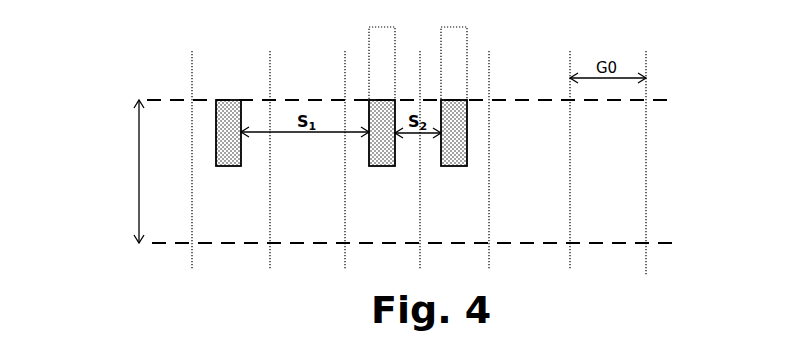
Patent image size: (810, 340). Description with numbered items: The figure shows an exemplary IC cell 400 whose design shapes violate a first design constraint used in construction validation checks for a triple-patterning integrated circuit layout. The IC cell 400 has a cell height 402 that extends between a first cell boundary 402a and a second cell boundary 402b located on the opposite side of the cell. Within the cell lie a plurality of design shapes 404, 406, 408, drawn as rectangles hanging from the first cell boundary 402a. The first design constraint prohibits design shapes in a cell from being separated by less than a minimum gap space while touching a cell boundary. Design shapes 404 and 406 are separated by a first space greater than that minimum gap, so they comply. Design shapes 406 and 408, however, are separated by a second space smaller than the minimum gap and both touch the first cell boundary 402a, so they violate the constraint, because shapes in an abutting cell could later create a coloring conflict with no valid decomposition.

The IC cell 400 is at (88, 55).
The cell height 402 is at (118, 171).
The first cell boundary 402a is at (680, 100).
The second cell boundary 402b is at (680, 243).
The design shape 404 is at (228, 166).
The design shape 406 is at (381, 166).
The design shape 408 is at (453, 166).